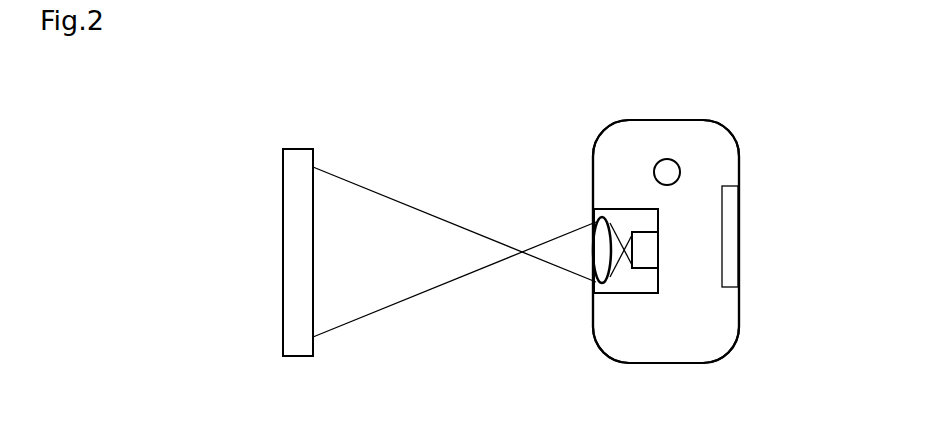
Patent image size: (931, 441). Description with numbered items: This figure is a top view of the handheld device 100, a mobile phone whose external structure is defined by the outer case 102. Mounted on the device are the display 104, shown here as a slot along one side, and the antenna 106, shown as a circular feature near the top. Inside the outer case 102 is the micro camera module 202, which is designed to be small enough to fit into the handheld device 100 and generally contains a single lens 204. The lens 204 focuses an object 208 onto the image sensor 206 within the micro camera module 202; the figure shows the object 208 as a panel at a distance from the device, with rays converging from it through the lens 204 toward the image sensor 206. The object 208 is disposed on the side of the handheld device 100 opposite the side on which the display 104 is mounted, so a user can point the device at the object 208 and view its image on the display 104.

The handheld device 100 is at (756, 115).
The outer case 102 is at (665, 120).
The display 104 is at (740, 233).
The antenna 106 is at (680, 168).
The micro camera module 202 is at (614, 293).
The lens 204 is at (606, 282).
The image sensor 206 is at (658, 250).
The object 208 is at (294, 149).